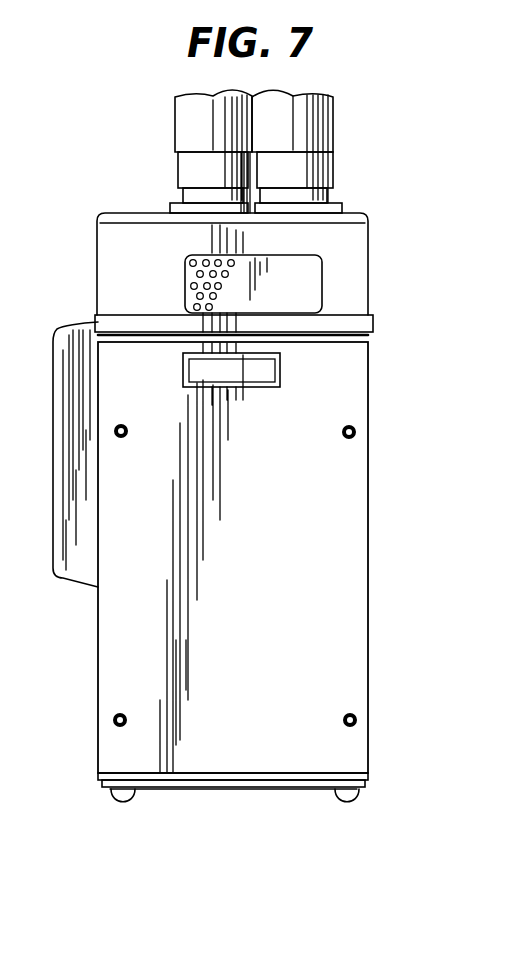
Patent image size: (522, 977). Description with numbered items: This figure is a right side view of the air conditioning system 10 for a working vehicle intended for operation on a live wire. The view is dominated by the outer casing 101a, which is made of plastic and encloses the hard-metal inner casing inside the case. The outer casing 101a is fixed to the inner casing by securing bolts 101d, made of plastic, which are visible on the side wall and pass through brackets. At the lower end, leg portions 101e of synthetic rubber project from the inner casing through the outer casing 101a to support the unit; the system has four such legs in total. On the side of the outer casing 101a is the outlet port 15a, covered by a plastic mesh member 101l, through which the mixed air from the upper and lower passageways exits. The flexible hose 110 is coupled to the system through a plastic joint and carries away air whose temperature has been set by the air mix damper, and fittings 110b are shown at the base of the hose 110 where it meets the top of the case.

The air conditioning system 10 is at (203, 798).
The flexible hose 110 is at (188, 130).
The knob base flange 110b is at (172, 205).
The outlet port 15a is at (183, 268).
The mesh member 101l is at (225, 298).
The securing bolt 101d is at (358, 718).
The outer casing 101a is at (282, 768).
The leg portion 101e is at (345, 797).